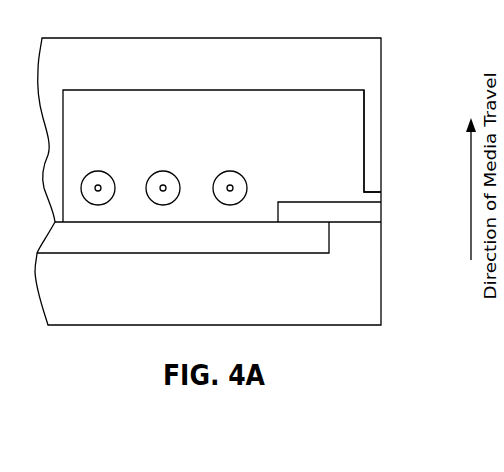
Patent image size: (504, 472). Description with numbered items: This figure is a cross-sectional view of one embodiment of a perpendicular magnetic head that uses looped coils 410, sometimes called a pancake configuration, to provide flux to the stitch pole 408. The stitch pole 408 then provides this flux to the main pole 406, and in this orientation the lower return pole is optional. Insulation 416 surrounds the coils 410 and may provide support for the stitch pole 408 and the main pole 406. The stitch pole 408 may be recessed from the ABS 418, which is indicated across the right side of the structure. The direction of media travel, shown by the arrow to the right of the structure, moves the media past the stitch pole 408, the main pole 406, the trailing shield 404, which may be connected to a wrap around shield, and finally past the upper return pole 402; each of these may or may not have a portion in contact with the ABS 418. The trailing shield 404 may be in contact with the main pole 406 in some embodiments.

The upper return pole 402 is at (259, 72).
The trailing shield 404 is at (381, 121).
The main pole 406 is at (381, 208).
The stitch pole 408 is at (240, 246).
The looped coils 410 is at (95, 176).
The insulation 416 is at (296, 164).
The ABS 418 is at (386, 53).